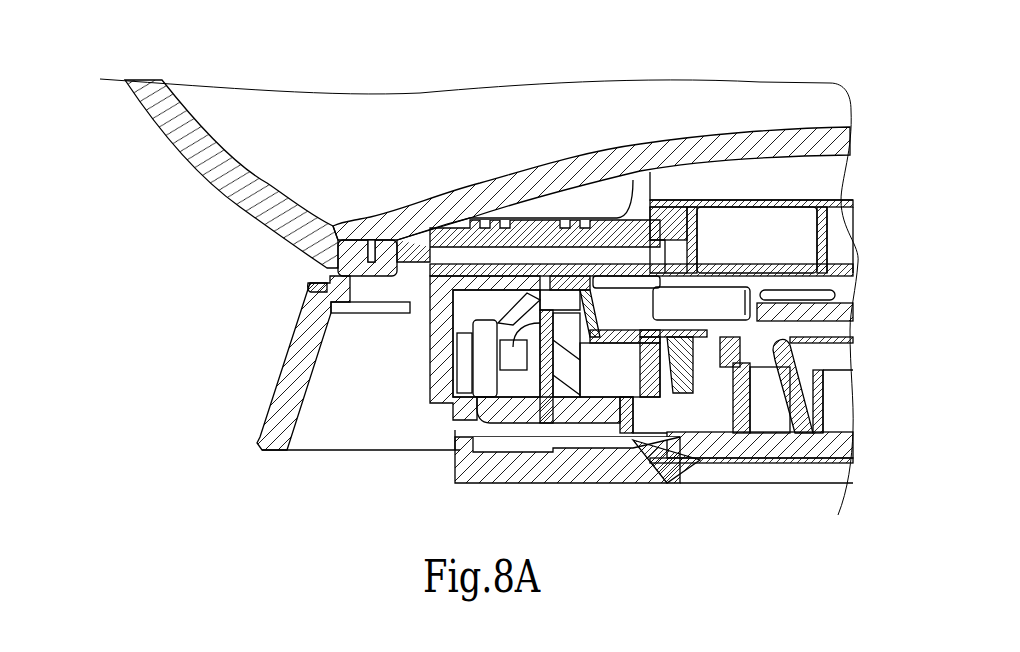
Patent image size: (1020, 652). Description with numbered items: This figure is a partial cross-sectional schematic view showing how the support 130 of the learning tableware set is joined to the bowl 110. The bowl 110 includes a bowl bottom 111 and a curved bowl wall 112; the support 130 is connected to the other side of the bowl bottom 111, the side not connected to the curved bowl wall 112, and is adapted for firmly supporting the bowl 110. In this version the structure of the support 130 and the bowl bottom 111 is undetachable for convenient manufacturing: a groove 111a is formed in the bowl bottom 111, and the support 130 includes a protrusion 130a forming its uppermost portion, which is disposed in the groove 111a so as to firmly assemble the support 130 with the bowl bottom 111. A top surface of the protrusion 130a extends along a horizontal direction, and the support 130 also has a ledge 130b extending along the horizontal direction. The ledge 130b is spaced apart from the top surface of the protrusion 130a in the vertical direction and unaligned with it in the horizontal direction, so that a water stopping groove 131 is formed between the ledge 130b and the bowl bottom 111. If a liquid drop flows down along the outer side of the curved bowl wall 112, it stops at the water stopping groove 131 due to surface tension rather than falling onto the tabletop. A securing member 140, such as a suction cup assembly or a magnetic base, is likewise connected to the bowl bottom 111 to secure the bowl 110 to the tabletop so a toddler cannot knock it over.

The bowl 110 is at (200, 195).
The bowl bottom 111 is at (687, 150).
The groove 111a is at (373, 254).
The curved bowl wall 112 is at (192, 133).
The support 130 is at (283, 387).
The protrusion 130a is at (343, 313).
The ledge 130b is at (303, 293).
The water stopping groove 131 is at (312, 271).
The securing member 140 is at (603, 473).